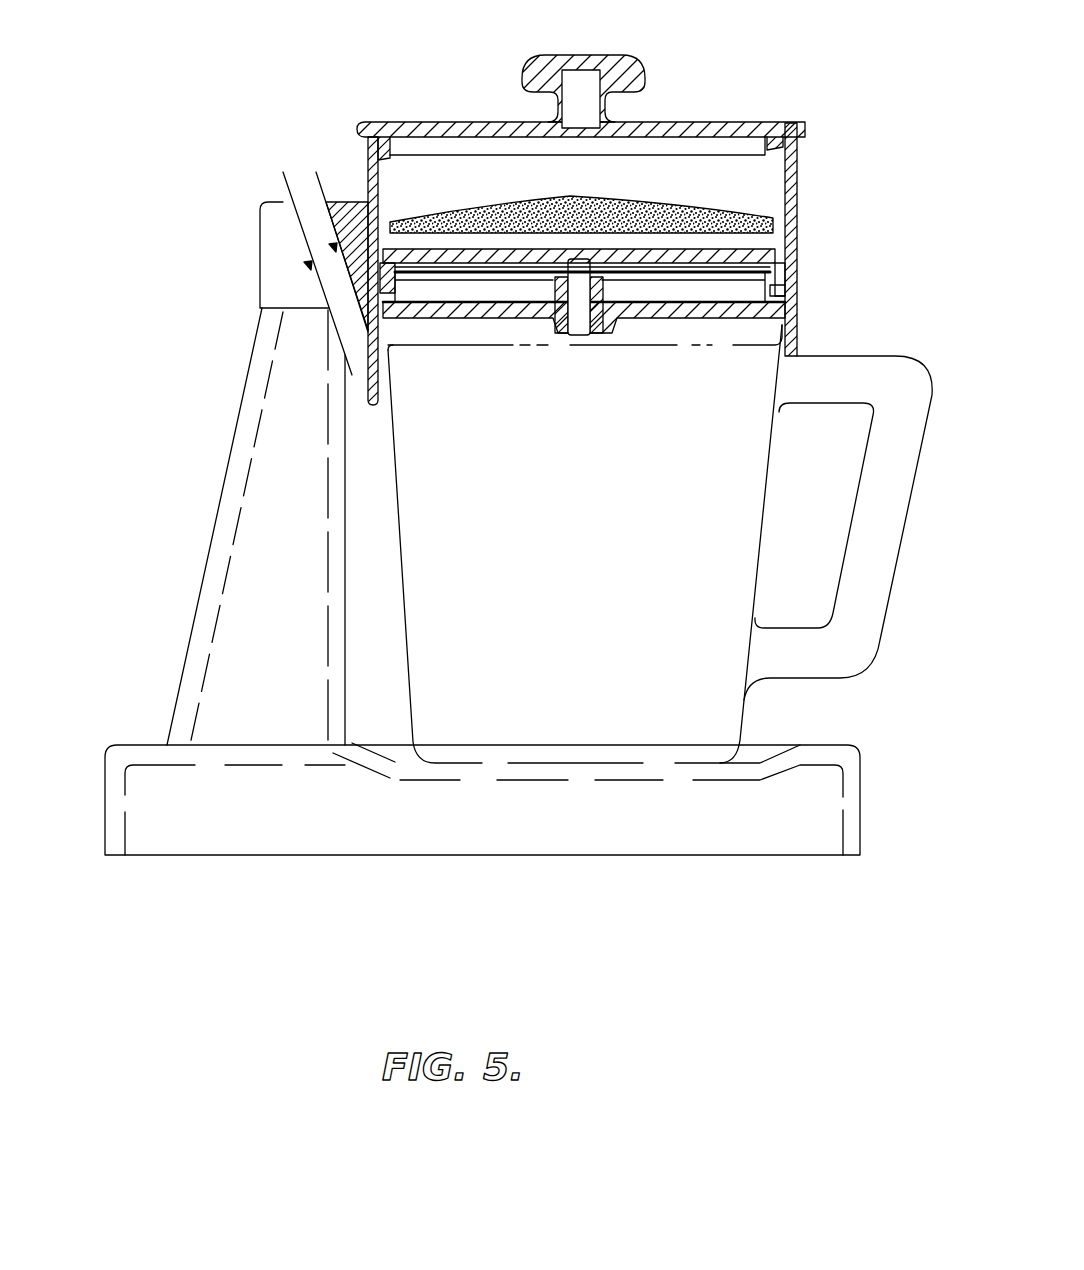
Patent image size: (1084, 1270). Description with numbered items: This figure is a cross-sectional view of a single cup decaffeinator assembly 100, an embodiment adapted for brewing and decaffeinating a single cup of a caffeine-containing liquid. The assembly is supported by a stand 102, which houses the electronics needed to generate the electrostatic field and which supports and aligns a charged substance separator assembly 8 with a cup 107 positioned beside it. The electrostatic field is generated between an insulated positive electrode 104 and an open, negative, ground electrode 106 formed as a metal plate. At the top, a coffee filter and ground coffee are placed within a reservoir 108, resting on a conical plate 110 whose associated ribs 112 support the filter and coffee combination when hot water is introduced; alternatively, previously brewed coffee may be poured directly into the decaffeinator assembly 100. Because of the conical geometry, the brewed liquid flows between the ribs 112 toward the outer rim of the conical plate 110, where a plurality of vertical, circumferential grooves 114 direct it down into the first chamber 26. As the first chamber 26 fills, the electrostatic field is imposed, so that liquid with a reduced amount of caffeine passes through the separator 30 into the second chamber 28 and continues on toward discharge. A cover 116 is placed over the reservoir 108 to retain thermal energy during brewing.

The single cup decaffeinator assembly 100 is at (830, 45).
The stand 102 is at (237, 520).
The insulated positive electrode 104 is at (733, 227).
The open, negative, ground electrode 106 is at (778, 267).
The cup 107 is at (722, 702).
The reservoir 108 is at (465, 173).
The conical plate 110 is at (387, 263).
The ribs 112 is at (395, 240).
The vertical, circumferential grooves 114 is at (783, 288).
The cover 116 is at (626, 55).
The charged substance separator assembly 8 is at (812, 301).
The first chamber 26 is at (477, 297).
The second chamber 28 is at (652, 283).
The separator 30 is at (757, 258).